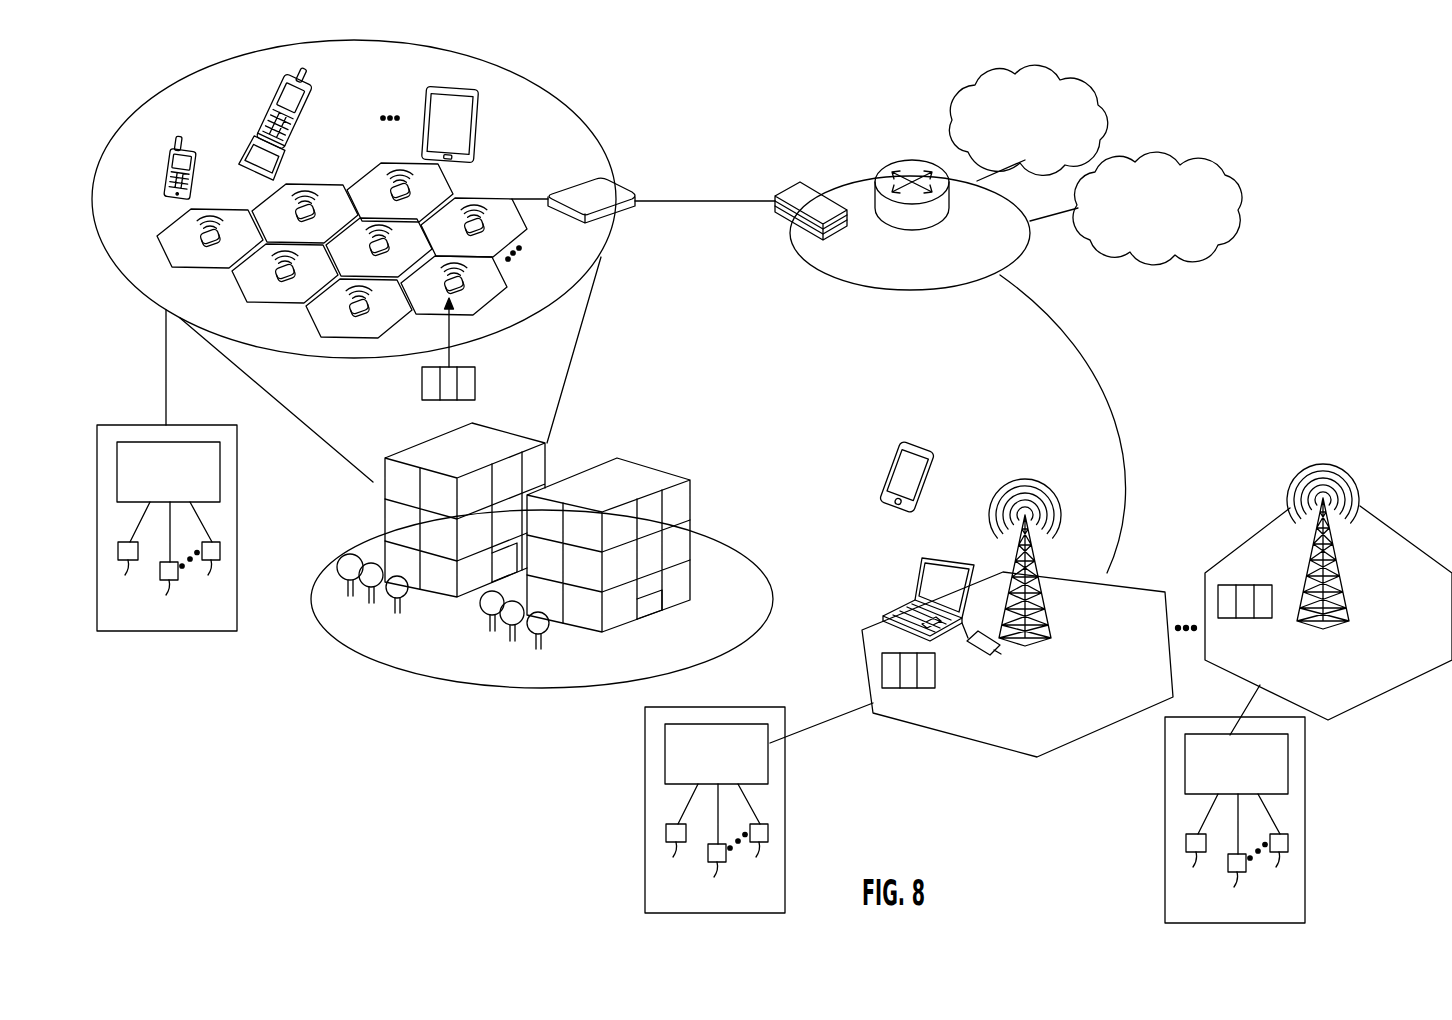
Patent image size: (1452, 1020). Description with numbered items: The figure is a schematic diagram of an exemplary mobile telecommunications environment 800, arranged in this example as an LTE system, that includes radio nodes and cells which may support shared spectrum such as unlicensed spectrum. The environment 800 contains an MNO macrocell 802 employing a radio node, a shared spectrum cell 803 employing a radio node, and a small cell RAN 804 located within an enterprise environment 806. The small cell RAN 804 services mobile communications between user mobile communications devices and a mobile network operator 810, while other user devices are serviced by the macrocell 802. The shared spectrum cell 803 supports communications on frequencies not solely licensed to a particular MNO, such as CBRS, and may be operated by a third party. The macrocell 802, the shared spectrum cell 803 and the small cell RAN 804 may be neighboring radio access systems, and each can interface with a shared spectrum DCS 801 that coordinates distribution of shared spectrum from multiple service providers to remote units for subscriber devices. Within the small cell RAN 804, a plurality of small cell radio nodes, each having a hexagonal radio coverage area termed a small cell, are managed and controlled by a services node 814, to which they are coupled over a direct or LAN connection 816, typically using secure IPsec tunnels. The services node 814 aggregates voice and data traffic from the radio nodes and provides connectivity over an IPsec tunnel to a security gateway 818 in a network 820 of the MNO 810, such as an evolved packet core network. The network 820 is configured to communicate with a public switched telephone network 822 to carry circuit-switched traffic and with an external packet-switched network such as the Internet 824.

The mobile telecommunications environment 800 is at (739, 53).
The small cell RAN 804 is at (354, 220).
The enterprise environment 806 is at (313, 590).
The mobile network operator (MNO) 810 is at (910, 225).
The services node 814 is at (622, 186).
The local area network (LAN) connection 816 is at (538, 197).
The security gateway (SeGW) 818 is at (800, 182).
The network 820 is at (860, 305).
The public switched telephone network (PSTN) 822 is at (1170, 162).
The Internet 824 is at (1000, 73).
The shared spectrum DCS 801 is at (195, 631).
The MNO macrocell 802 is at (963, 741).
The shared spectrum cell 803 is at (1328, 592).